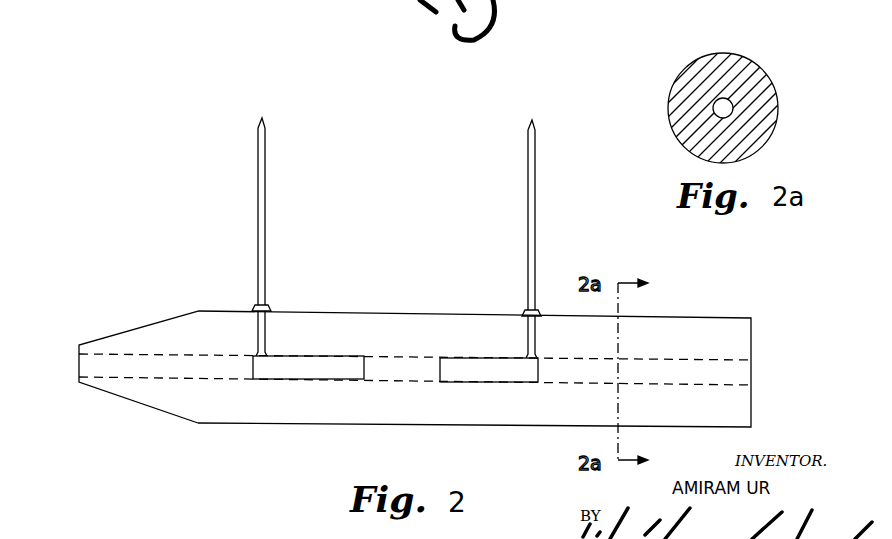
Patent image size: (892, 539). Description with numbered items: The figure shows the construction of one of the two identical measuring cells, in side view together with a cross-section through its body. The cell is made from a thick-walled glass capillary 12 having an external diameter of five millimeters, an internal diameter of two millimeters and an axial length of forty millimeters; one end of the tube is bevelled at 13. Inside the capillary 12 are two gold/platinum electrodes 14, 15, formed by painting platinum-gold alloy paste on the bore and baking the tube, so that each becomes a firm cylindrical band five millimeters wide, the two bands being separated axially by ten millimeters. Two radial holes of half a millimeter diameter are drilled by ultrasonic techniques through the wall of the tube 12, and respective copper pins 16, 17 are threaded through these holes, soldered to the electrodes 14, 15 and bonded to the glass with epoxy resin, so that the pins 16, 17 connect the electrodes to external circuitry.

In FIG. 2, the glass capillary 12 is at (405, 320).
In FIG. 2A, the glass capillary 12 is at (723, 55).
In FIG. 2, the bevelled end 13 is at (122, 338).
In FIG. 2, the gold/platinum electrode 14 is at (293, 372).
In FIG. 2, the gold/platinum electrode 15 is at (472, 372).
In FIG. 2, the copper pin 16 is at (265, 192).
In FIG. 2, the copper pin 17 is at (535, 215).